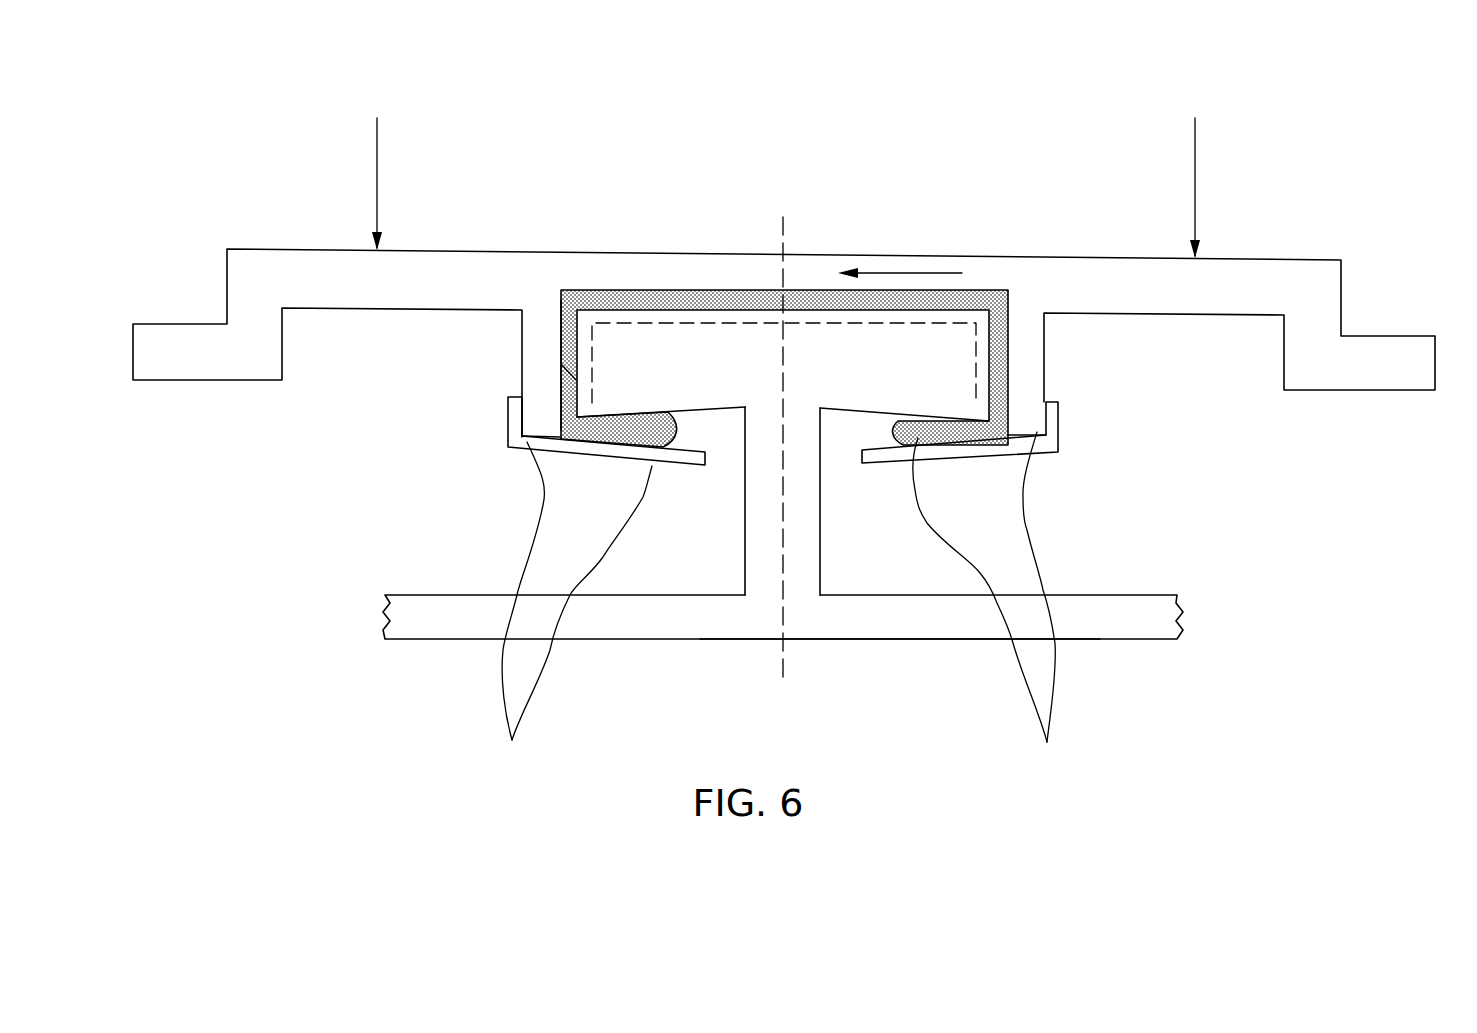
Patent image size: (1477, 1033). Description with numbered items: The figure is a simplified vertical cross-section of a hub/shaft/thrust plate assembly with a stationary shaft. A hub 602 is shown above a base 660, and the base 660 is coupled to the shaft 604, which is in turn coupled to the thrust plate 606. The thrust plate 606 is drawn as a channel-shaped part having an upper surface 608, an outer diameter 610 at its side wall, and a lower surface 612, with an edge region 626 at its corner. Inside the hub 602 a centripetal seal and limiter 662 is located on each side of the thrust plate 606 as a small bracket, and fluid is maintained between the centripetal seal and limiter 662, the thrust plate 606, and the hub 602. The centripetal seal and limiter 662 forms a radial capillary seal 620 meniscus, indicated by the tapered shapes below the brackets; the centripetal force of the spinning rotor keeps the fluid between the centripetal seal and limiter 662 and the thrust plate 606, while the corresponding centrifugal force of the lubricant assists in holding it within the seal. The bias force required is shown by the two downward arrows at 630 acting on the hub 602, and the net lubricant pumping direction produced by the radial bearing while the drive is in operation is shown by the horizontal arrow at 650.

The hub 602 is at (1315, 290).
The shaft 604 is at (763, 603).
The thrust plate 606 is at (858, 383).
The upper surface 608 is at (627, 290).
The outer diameter 610 is at (560, 372).
The lower surface 612 is at (717, 420).
The capillary seal 620 is at (782, 603).
The cup corner edge 626 is at (560, 375).
The bias force 630 is at (377, 173).
The net lubricant pumping direction 650 is at (913, 272).
The base 660 is at (915, 622).
The centripetal seal and limiter 662 is at (507, 422).